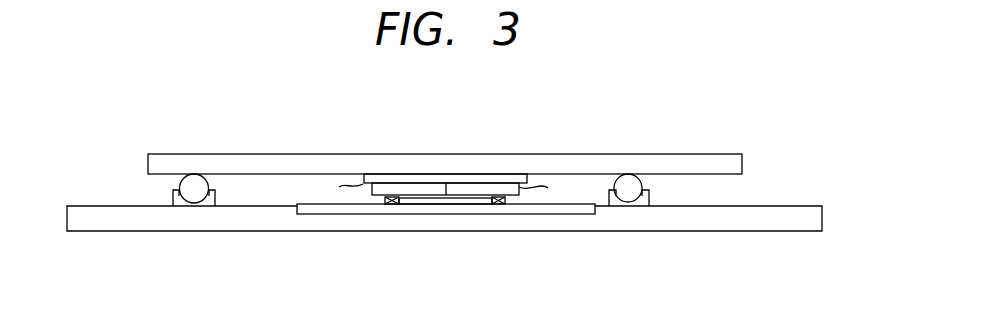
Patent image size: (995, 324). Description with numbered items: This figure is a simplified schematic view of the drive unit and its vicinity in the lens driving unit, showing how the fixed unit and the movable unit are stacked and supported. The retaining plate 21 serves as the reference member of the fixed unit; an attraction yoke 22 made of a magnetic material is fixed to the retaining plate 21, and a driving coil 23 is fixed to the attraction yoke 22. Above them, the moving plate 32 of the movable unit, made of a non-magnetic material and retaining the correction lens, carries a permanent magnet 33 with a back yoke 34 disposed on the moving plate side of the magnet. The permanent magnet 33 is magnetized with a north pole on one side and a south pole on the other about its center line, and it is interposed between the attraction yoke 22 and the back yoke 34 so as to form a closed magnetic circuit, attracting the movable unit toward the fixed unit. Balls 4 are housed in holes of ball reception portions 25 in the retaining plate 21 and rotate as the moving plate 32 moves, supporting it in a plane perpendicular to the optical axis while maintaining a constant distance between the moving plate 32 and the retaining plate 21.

The moving plate 32 is at (258, 162).
The permanent magnet 33 is at (419, 186).
The back yoke 34 is at (501, 178).
The ball 4 is at (628, 182).
The retaining plate 21 is at (547, 223).
The attraction yoke 22 is at (360, 208).
The driving coil 23 is at (437, 200).
The ball reception portion 25 is at (642, 200).